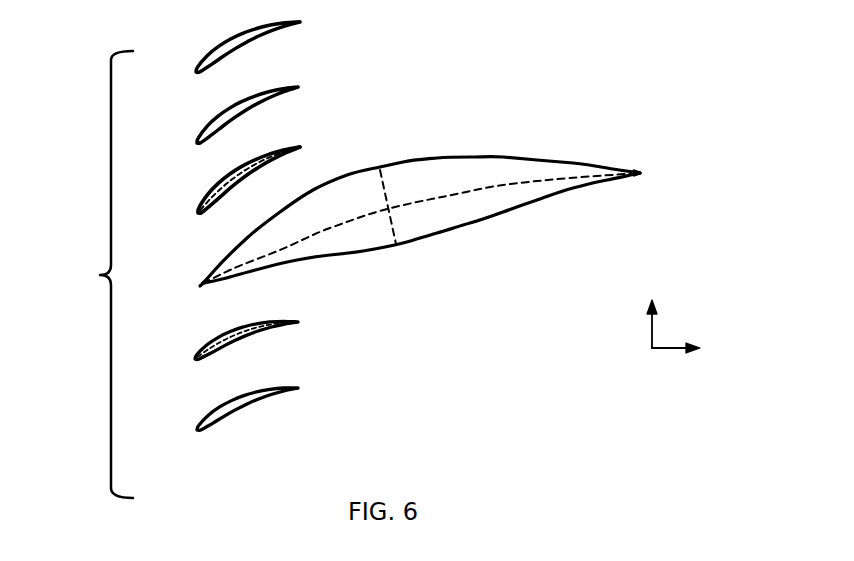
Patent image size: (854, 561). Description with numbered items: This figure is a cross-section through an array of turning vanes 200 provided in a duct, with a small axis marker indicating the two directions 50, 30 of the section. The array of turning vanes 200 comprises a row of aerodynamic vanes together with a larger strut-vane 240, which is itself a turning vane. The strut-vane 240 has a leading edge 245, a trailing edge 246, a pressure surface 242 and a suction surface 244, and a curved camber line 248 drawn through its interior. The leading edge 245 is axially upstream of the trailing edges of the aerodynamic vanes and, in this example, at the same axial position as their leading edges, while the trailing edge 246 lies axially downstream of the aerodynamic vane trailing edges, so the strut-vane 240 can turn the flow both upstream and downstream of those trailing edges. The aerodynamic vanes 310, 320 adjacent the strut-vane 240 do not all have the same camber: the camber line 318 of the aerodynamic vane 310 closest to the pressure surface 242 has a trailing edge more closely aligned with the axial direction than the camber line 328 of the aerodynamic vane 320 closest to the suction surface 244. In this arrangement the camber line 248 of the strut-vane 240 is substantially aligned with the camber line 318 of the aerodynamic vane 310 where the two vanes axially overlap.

The array of turning vanes 200 is at (86, 274).
The aerodynamic vane 320 is at (282, 138).
The camber line 328 is at (246, 184).
The aerodynamic vane 310 is at (261, 327).
The camber line 318 is at (233, 333).
The strut-vane 240 is at (427, 200).
The pressure surface 242 is at (463, 228).
The suction surface 244 is at (617, 168).
The leading edge 245 is at (200, 282).
The trailing edge 246 is at (641, 174).
The camber line 248 is at (512, 183).
The radial direction 50 is at (652, 310).
The axial direction 30 is at (692, 350).